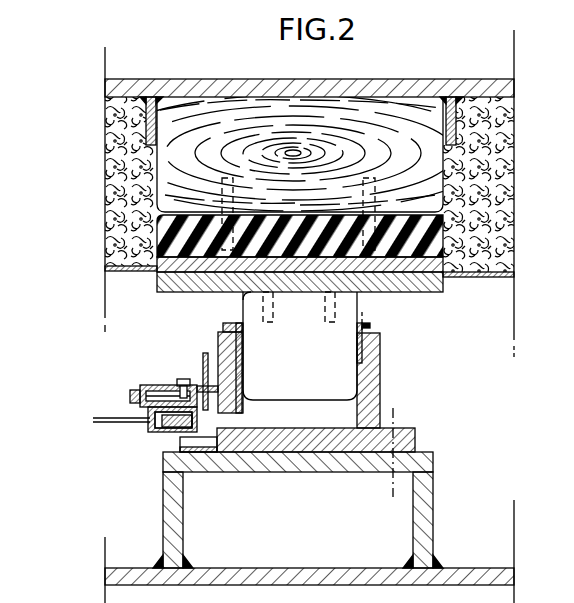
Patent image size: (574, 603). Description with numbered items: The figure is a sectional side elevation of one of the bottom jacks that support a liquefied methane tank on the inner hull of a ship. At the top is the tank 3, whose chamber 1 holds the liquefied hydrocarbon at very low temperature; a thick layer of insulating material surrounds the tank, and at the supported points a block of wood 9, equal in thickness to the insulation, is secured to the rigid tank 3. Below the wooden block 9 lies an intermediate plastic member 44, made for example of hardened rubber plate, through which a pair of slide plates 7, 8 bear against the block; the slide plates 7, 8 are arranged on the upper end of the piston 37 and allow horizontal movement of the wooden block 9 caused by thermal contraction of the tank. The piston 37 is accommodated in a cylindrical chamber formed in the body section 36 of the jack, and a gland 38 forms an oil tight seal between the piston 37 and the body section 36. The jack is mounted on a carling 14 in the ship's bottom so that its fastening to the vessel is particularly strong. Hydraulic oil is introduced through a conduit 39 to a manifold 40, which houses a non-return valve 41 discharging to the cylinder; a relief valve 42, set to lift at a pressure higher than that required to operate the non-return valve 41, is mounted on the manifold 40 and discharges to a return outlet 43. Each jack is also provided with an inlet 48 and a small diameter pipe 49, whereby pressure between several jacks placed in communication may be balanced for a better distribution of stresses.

The chamber 1 is at (309, 316).
The tank 3 is at (158, 90).
The slide plate 7 is at (157, 272).
The slide plate 8 is at (185, 290).
The block of wood 9 is at (246, 134).
The carling 14 is at (285, 462).
The body section 36 is at (305, 452).
The piston 37 is at (271, 357).
The gland 38 is at (370, 326).
The conduit 39 is at (116, 418).
The manifold 40 is at (150, 432).
The non-return valve 41 is at (178, 420).
The relief valve 42 is at (172, 390).
The return outlet 43 is at (184, 385).
The intermediate plastic member 44 is at (192, 236).
The inlet 48 is at (192, 424).
The pipe 49 is at (205, 392).